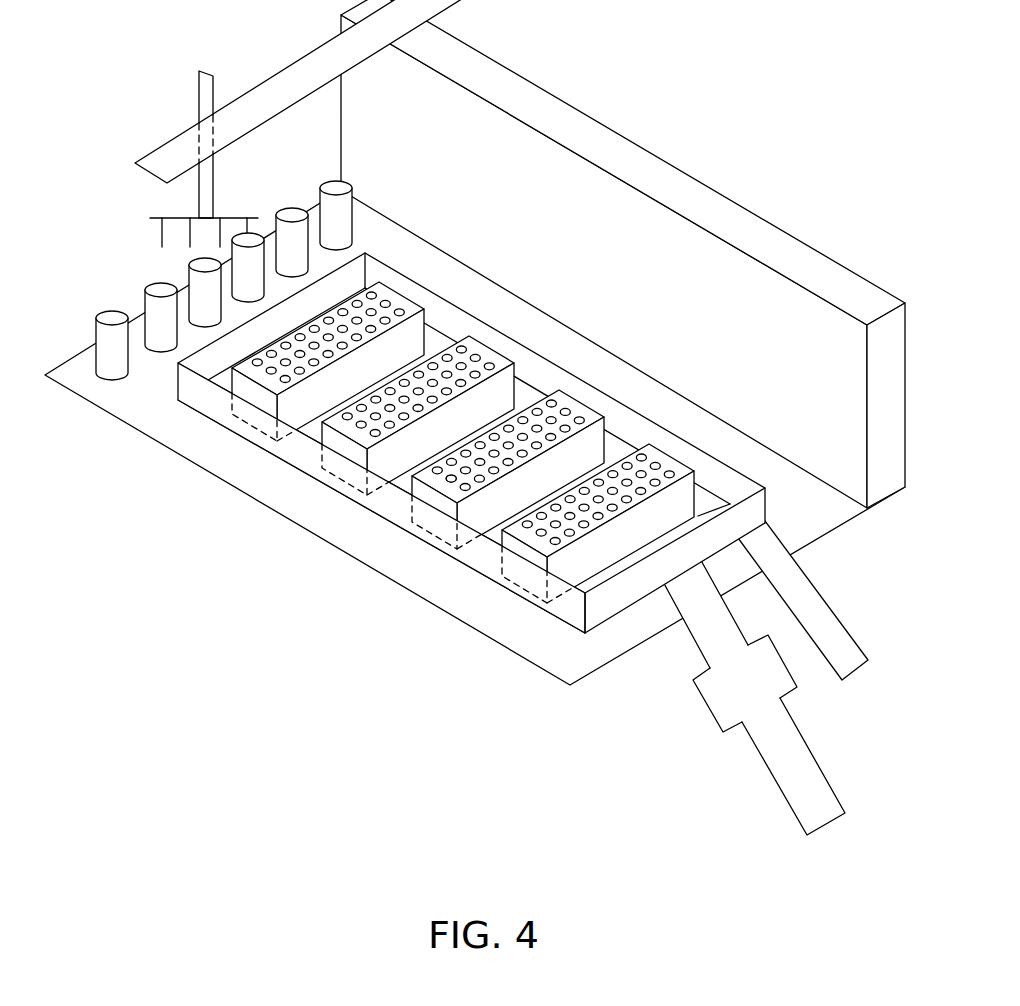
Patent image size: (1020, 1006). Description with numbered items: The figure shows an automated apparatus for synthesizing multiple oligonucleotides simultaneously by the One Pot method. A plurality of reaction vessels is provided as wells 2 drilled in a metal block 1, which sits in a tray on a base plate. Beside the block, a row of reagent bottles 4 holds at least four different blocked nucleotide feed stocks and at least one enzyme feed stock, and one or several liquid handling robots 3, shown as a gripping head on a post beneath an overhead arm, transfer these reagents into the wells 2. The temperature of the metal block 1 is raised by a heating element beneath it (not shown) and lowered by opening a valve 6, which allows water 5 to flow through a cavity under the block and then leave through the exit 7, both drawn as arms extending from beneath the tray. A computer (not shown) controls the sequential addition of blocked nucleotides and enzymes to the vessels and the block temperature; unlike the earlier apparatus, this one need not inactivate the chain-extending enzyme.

The metal block 1 is at (432, 497).
The wells 2 is at (452, 482).
The liquid handling robot 3 is at (162, 235).
The reagent bottles 4 is at (102, 333).
The water 5 is at (792, 778).
The valve 6 is at (718, 700).
The exit 7 is at (805, 592).